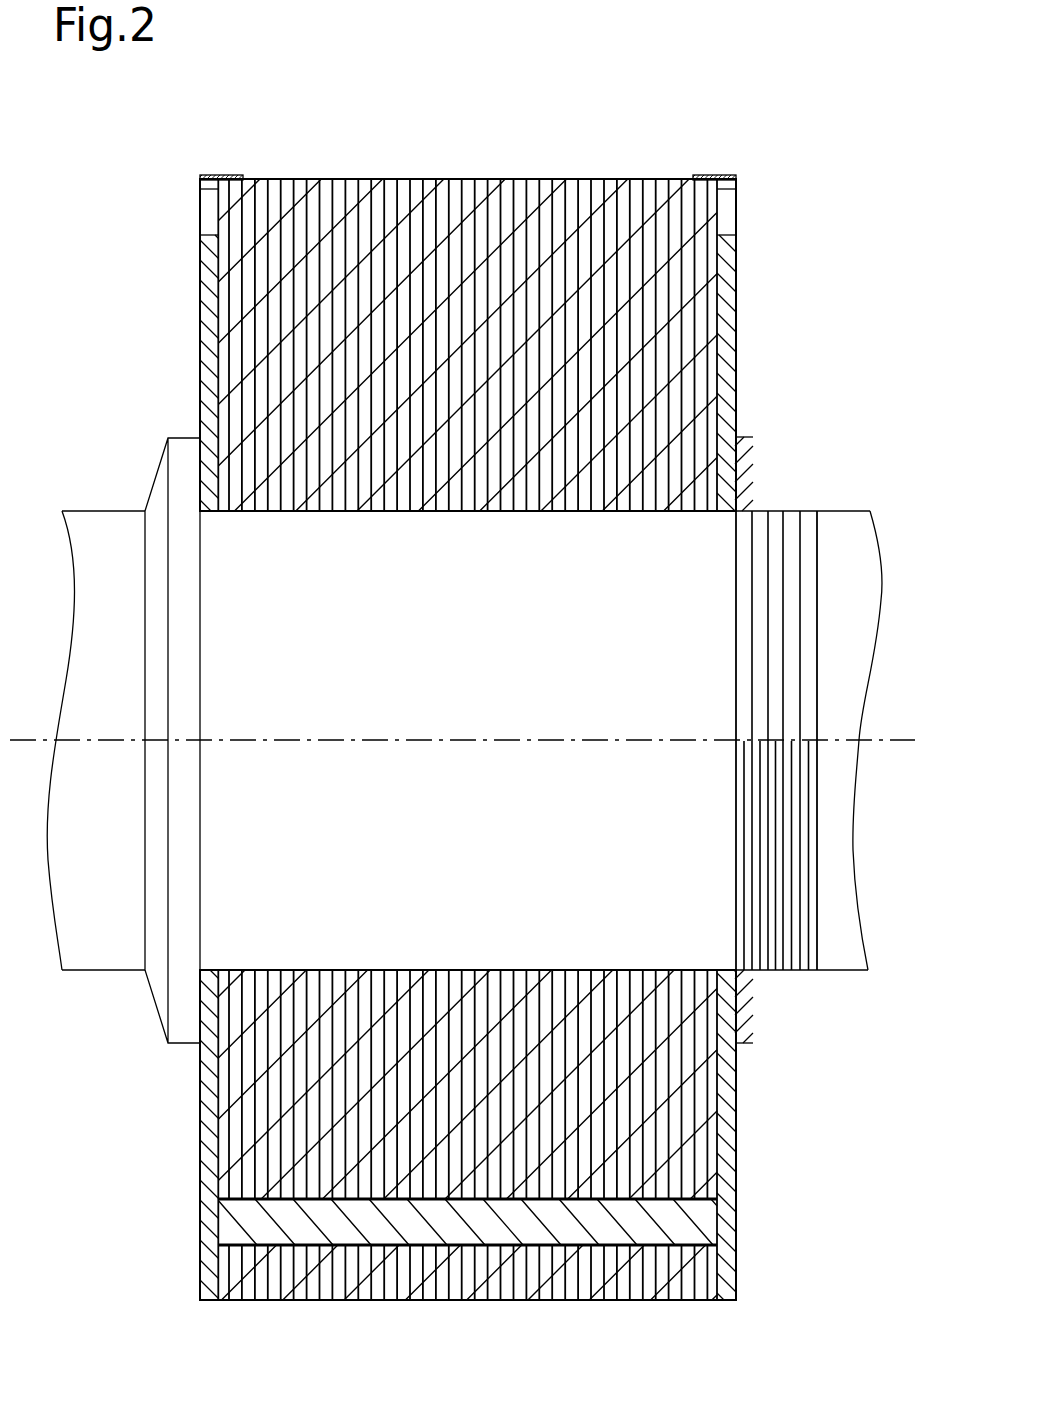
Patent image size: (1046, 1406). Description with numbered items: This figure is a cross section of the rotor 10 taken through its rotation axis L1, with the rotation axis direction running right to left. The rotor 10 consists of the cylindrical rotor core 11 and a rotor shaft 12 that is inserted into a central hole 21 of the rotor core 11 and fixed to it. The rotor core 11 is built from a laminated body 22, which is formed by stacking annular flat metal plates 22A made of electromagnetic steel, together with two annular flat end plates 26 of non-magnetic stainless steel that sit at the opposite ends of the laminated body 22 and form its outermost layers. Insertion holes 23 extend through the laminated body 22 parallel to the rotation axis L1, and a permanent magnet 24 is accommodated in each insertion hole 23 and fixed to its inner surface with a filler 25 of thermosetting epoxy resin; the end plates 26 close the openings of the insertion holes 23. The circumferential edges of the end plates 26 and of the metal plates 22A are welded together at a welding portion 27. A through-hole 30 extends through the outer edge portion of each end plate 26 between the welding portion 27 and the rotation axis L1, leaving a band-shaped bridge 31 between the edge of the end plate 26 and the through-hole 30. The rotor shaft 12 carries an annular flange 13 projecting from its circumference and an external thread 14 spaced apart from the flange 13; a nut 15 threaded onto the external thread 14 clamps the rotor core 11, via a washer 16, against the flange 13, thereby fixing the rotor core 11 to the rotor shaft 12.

The rotor 10 is at (150, 124).
The rotor core 11 is at (740, 390).
The rotor shaft 12 is at (108, 509).
The annular flange 13 is at (178, 437).
The external thread 14 is at (830, 972).
The nut 15 is at (770, 1043).
The washer 16 is at (734, 1043).
The central hole 21 is at (641, 513).
The laminated body 22 is at (717, 177).
The metal plates 22A is at (300, 179).
The insertion holes 23 is at (404, 1300).
The permanent magnet 24 is at (680, 1219).
The filler 25 is at (670, 1190).
The end plates 26 is at (208, 296).
The welding portion 27 is at (212, 176).
The through-holes 30 is at (208, 226).
The bridge 31 is at (212, 192).
The rotation axis L1 is at (875, 742).